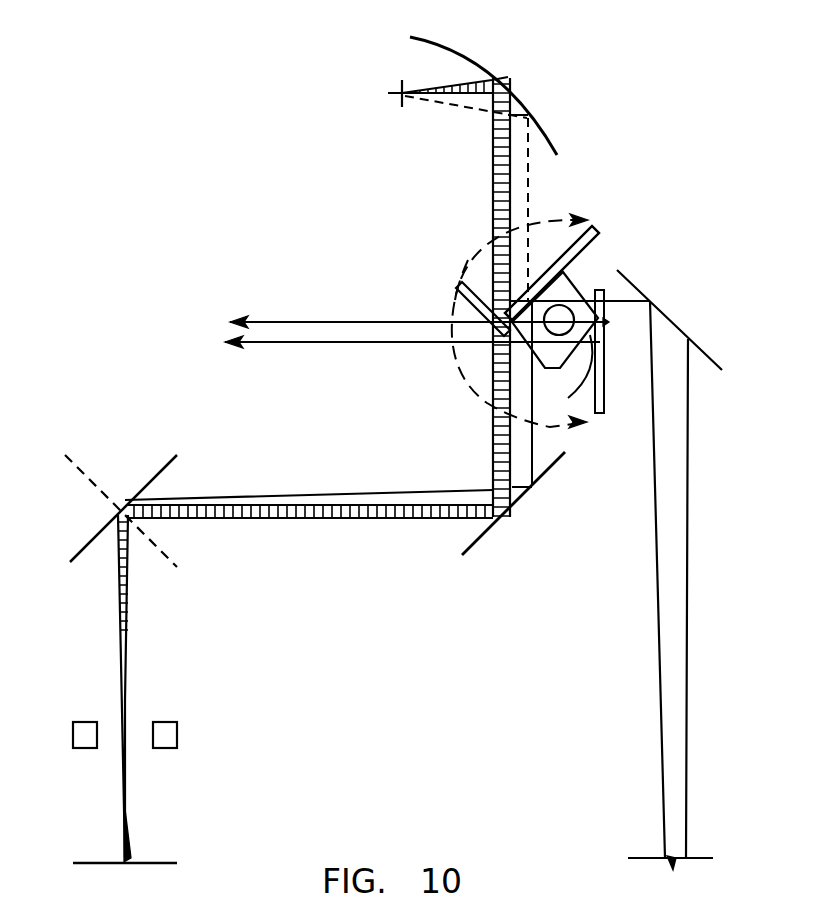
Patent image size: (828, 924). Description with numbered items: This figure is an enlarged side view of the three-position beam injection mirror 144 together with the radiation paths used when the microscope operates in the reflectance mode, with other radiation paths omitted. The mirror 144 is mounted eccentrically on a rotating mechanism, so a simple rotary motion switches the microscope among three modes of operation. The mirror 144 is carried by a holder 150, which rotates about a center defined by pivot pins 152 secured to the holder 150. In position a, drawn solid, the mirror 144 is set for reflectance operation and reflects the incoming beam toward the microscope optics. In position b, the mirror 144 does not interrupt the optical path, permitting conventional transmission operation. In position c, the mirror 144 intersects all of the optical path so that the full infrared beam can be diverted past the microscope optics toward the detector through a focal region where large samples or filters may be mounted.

The beam injection mirror 144 is at (583, 258).
The holder 150 is at (575, 286).
The pivot pins 152 is at (522, 321).
The position a is at (597, 236).
The position b is at (597, 416).
The position c is at (455, 308).